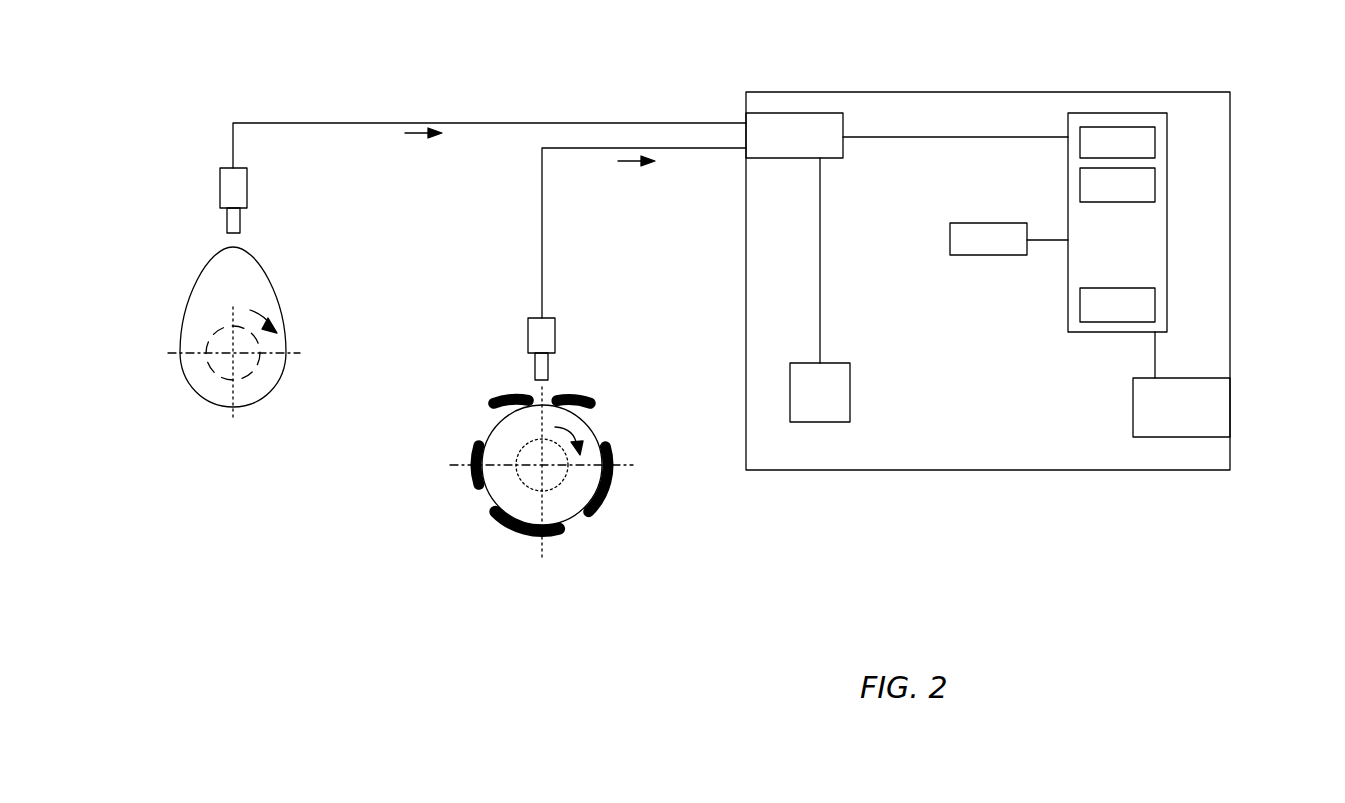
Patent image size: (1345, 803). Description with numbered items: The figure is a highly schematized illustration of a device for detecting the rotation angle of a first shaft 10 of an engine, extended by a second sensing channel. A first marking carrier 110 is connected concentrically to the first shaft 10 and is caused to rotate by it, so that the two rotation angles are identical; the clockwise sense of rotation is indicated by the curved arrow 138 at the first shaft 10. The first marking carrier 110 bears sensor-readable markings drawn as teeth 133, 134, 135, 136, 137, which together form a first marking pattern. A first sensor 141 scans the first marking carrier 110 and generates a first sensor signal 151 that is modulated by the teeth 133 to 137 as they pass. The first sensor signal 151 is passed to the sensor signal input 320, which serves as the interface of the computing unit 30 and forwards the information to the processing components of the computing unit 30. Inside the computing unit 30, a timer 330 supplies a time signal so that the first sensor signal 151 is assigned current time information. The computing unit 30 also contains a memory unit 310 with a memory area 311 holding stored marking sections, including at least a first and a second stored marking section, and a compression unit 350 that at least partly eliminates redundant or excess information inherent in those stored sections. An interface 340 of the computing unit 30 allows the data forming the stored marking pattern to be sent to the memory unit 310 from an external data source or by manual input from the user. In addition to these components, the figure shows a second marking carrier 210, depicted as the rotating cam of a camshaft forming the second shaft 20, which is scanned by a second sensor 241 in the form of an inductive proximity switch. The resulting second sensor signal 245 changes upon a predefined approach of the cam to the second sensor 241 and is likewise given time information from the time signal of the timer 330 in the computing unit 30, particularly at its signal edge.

The first shaft 10 is at (552, 480).
The second shaft 20 is at (228, 362).
The computing unit 30 is at (1213, 118).
The first marking carrier 110 is at (500, 487).
The tooth 133 is at (590, 408).
The tooth 134 is at (502, 404).
The tooth 135 is at (472, 456).
The tooth 136 is at (498, 527).
The tooth 137 is at (606, 504).
The curved arrow 138 is at (590, 423).
The first sensor 141 is at (547, 332).
The first sensor signal 151 is at (644, 233).
The second marking carrier 210 is at (252, 393).
The second sensor 241 is at (238, 197).
The second sensor signal 245 is at (489, 149).
The memory unit 310 is at (1152, 257).
The memory area 311 is at (1147, 192).
The sensor signal input 320 is at (795, 135).
The timer 330 is at (807, 408).
The interface 340 is at (1215, 397).
The compression unit 350 is at (988, 242).